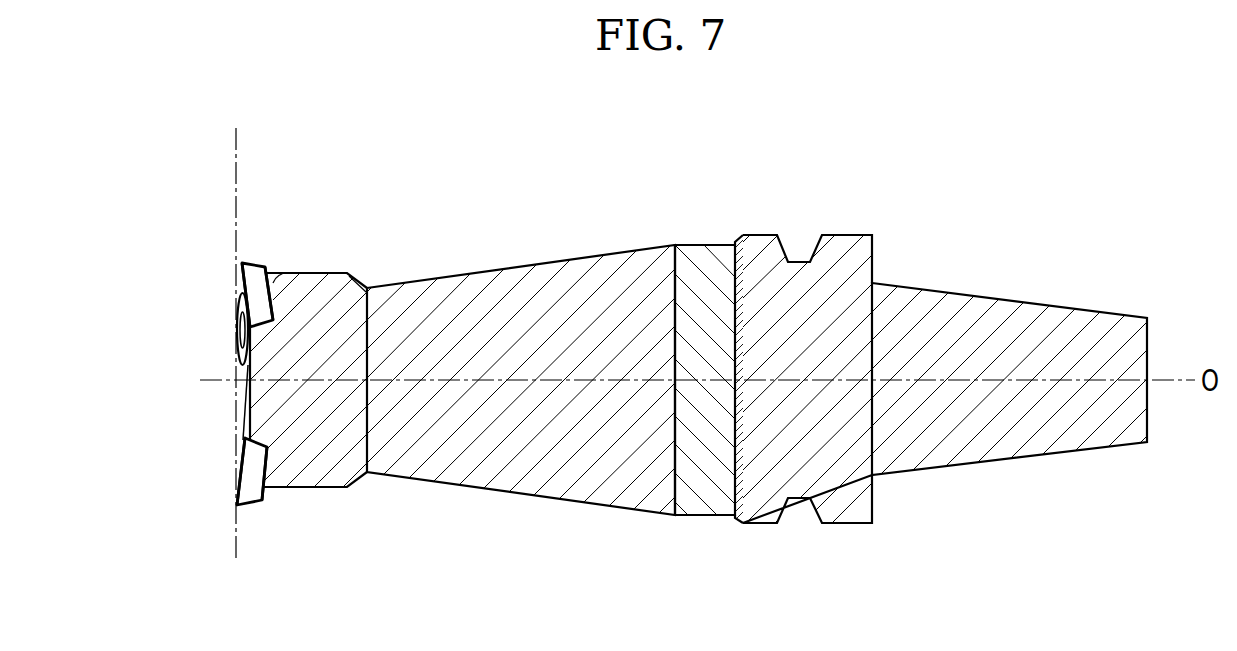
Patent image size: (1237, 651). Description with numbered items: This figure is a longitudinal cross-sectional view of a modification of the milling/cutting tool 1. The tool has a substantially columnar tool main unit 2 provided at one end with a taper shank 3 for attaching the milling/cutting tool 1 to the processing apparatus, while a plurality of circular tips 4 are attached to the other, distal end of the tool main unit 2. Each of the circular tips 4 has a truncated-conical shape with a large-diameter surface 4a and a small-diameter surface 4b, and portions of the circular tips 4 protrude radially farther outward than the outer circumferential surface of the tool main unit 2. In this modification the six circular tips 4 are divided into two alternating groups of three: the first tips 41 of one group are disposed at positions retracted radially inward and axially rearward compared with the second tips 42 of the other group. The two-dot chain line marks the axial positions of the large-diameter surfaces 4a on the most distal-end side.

The milling/cutting tool 1 is at (160, 203).
The tool main unit 2 is at (503, 255).
The taper shank 3 is at (970, 296).
The circular tips 4 is at (230, 243).
The large-diameter surfaces 4a is at (245, 280).
The small-diameter surfaces 4b is at (273, 288).
The first tips 41 is at (252, 263).
The second tips 42 is at (257, 507).